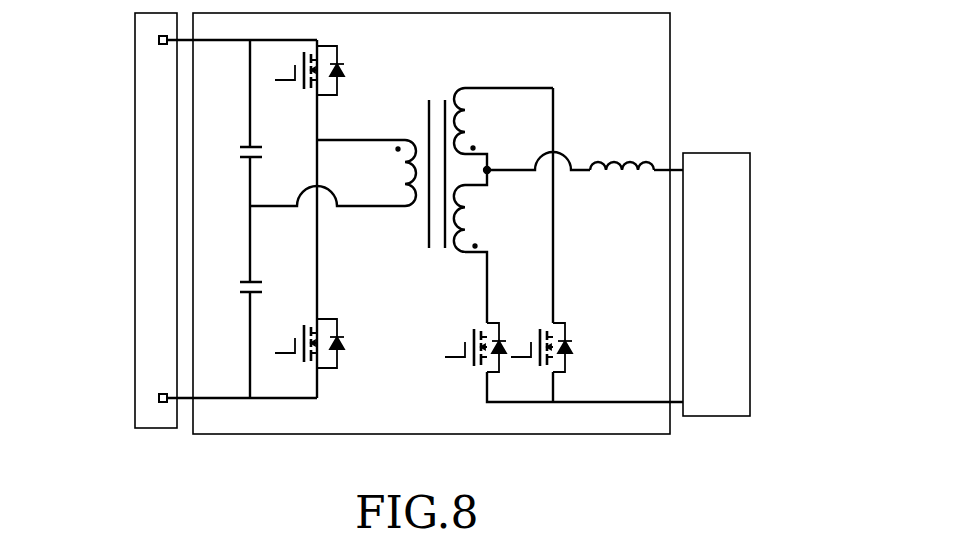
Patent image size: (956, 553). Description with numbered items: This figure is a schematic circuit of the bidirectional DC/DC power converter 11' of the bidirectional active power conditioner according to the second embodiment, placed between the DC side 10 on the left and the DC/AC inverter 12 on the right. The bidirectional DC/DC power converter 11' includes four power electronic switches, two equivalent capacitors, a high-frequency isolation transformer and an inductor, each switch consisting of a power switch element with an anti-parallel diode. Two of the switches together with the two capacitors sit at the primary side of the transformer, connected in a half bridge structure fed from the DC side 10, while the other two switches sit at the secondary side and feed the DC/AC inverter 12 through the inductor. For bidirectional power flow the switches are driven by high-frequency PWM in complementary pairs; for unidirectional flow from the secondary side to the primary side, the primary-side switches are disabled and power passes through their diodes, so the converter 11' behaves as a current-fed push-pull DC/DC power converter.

The DC side 10 is at (135, 368).
The bidirectional DC/DC power converter 11' is at (425, 255).
The DC/AC inverter 12 is at (750, 255).